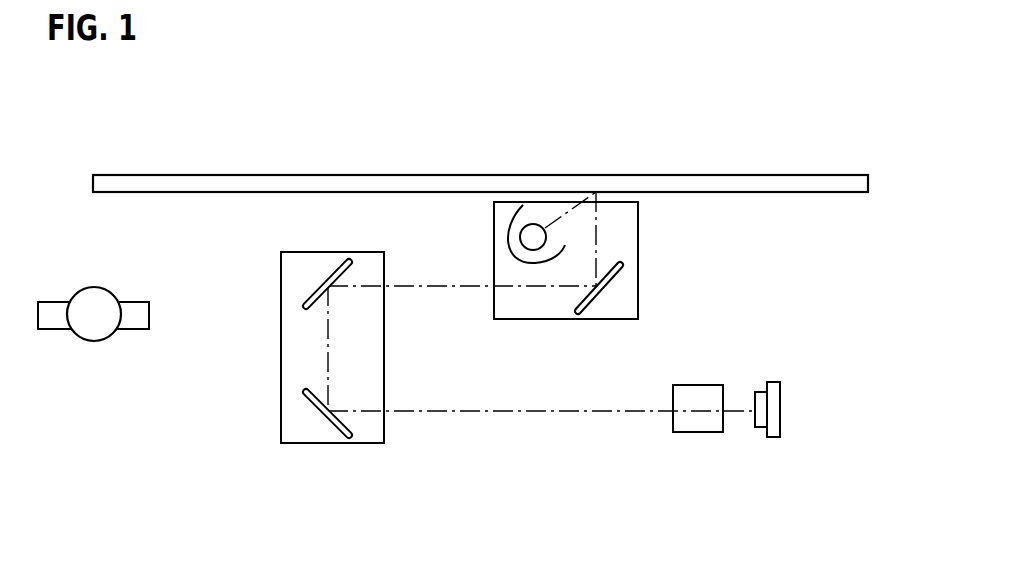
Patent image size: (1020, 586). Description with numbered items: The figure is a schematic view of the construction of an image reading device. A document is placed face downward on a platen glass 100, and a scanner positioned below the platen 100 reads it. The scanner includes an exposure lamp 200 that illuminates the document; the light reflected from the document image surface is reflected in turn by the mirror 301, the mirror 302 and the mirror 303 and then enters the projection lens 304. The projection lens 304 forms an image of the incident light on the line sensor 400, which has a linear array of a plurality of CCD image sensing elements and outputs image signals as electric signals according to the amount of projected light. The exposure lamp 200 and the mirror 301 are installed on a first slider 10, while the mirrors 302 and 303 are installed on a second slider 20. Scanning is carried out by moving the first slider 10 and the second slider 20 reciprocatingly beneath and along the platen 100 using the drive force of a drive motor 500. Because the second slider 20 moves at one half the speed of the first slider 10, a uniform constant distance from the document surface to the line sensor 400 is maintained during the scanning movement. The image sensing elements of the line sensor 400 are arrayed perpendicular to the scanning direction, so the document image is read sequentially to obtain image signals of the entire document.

The platen glass 100 is at (149, 175).
The drive motor 500 is at (137, 302).
The second slider 20 is at (281, 368).
The mirror 302 is at (310, 290).
The mirror 303 is at (310, 407).
The first slider 10 is at (638, 262).
The exposure lamp 200 is at (510, 237).
The mirror 301 is at (600, 288).
The projection lens 304 is at (687, 432).
The line sensor 400 is at (773, 437).